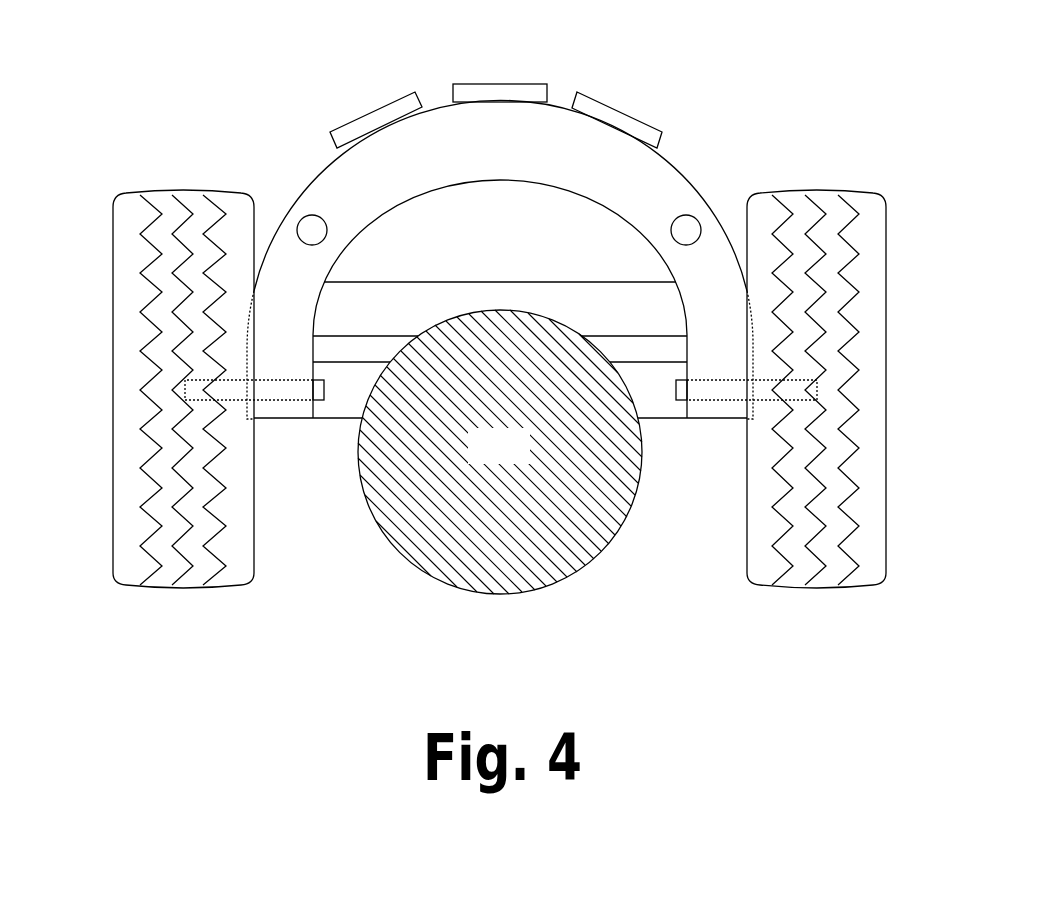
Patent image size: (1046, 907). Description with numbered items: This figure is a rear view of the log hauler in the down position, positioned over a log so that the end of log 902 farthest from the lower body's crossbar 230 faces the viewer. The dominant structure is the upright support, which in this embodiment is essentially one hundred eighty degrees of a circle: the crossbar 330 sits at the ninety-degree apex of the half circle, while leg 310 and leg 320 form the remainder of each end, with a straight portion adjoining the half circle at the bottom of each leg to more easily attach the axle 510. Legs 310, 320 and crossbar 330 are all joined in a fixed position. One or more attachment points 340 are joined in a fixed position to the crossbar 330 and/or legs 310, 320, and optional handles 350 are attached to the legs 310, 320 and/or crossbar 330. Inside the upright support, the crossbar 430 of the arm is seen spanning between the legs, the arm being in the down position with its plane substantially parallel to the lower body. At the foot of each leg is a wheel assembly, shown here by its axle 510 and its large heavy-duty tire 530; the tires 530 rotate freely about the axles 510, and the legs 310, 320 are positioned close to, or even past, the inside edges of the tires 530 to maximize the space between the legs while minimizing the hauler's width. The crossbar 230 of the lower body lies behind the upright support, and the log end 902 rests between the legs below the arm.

The crossbar 230 is at (354, 390).
The leg 310 is at (305, 306).
The leg 320 is at (695, 306).
The crossbar 330 is at (452, 122).
The attachment point 340 is at (498, 85).
The handle 350 is at (307, 220).
The crossbar 430 is at (515, 284).
The axle 510 is at (318, 398).
The tire 530 is at (116, 230).
The end of log 902 is at (500, 452).